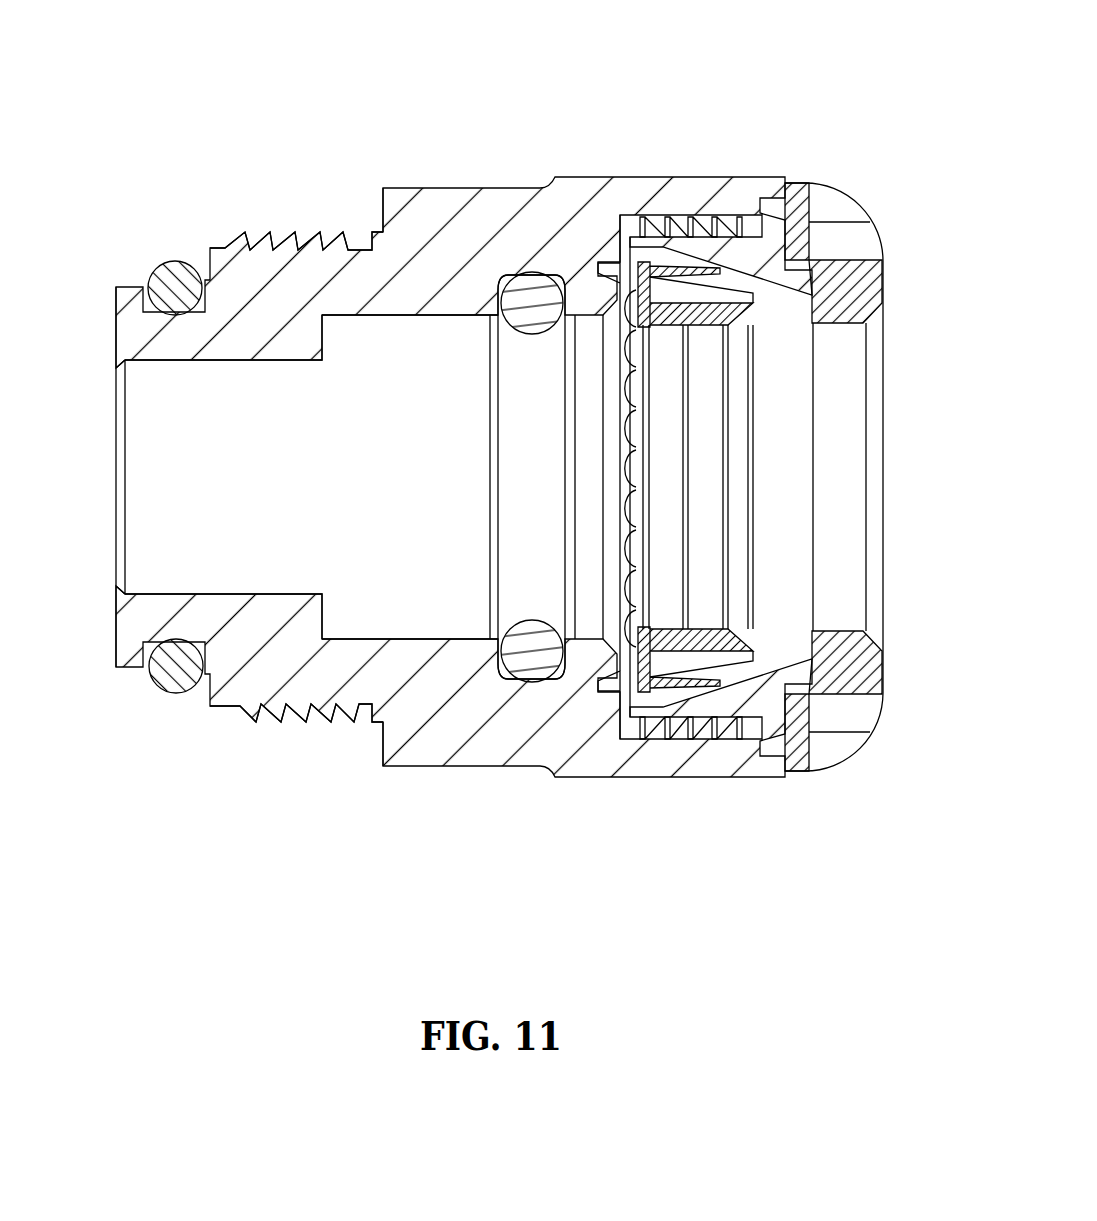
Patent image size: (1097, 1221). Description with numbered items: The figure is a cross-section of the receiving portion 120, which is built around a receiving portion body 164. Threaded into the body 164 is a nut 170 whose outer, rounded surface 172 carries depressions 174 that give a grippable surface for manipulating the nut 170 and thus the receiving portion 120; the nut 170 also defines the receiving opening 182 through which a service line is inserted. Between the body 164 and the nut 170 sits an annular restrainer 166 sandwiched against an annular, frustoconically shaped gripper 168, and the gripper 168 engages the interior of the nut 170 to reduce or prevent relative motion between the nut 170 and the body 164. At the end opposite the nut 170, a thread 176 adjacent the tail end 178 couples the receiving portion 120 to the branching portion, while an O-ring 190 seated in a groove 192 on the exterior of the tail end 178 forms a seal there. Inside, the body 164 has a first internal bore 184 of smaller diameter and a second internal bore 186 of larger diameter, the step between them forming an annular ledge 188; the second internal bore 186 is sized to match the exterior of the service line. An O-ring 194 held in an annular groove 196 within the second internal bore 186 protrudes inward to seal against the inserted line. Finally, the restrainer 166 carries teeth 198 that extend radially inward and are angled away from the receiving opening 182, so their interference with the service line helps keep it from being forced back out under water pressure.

The receiving portion 120 is at (797, 77).
The receiving portion body 164 is at (545, 766).
The annular restrainer 166 is at (637, 682).
The gripper 168 is at (792, 652).
The nut 170 is at (882, 282).
The outer rounded surface 172 is at (877, 713).
The depressions 174 is at (827, 713).
The thread 176 is at (278, 236).
The tail end 178 is at (130, 330).
The receiving opening 182 is at (883, 467).
The first internal bore 184 is at (182, 592).
The second internal bore 186 is at (415, 640).
The annular ledge 188 is at (330, 336).
The O-ring 190 is at (177, 694).
The groove 192 is at (163, 286).
The O-ring 194 is at (541, 297).
The annular groove 196 is at (520, 277).
The teeth 198 is at (640, 414).